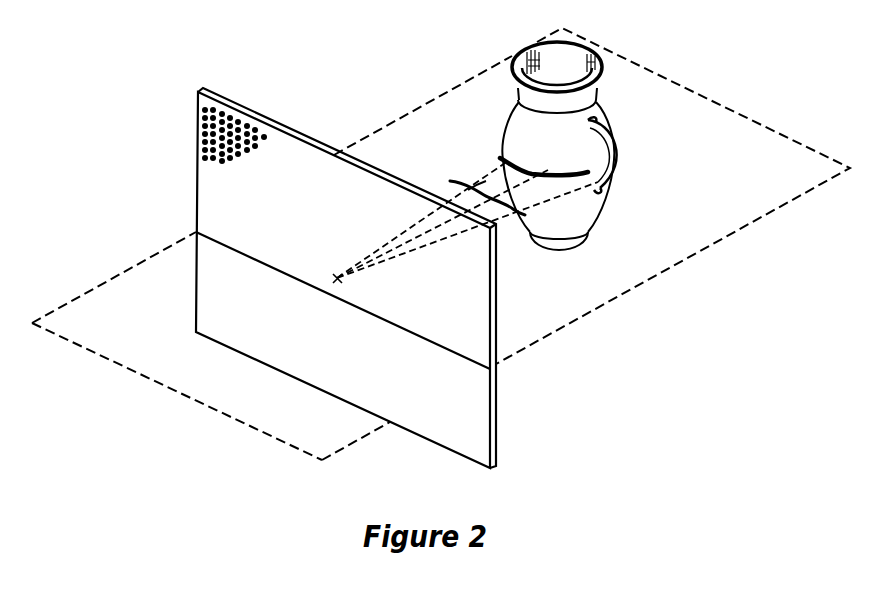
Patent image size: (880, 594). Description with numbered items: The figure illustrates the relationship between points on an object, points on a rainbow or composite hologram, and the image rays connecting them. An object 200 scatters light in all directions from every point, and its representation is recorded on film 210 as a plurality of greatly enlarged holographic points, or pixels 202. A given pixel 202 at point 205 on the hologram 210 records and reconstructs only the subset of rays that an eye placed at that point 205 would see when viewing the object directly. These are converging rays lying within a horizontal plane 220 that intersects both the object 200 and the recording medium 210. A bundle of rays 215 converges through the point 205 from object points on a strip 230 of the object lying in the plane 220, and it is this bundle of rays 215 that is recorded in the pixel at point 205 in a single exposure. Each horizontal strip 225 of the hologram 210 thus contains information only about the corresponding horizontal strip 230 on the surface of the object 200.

The object 200 is at (600, 51).
The pixels 202 is at (224, 118).
The point 205 is at (340, 281).
The film 210 is at (497, 398).
The bundle of rays 215 is at (481, 187).
The horizontal plane 220 is at (698, 228).
The horizontal strip 225 is at (453, 352).
The strip 230 is at (507, 165).